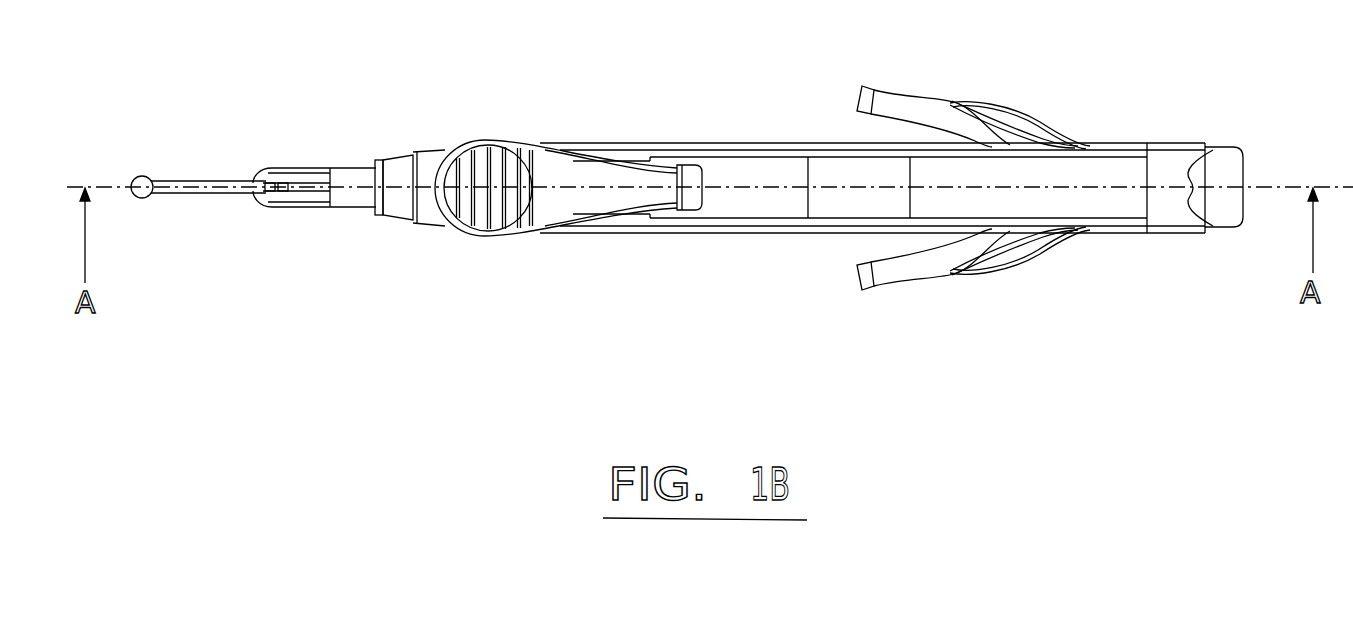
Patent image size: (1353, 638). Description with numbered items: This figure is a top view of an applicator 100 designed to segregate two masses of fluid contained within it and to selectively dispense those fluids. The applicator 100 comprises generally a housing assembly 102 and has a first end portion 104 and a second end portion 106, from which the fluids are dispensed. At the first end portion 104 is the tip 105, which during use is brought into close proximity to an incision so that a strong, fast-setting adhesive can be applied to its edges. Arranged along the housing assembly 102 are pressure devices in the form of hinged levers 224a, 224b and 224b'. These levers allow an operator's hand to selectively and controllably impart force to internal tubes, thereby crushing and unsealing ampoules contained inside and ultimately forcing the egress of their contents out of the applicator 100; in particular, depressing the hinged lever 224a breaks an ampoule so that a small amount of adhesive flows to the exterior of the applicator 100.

The applicator 100 is at (583, 144).
The housing assembly 102 is at (430, 148).
The first end portion 104 is at (338, 208).
The tip 105 is at (173, 175).
The second end portion 106 is at (1185, 233).
The hinged lever 224a is at (553, 207).
The hinged lever 224b is at (973, 82).
The hinged lever 224b' is at (973, 285).